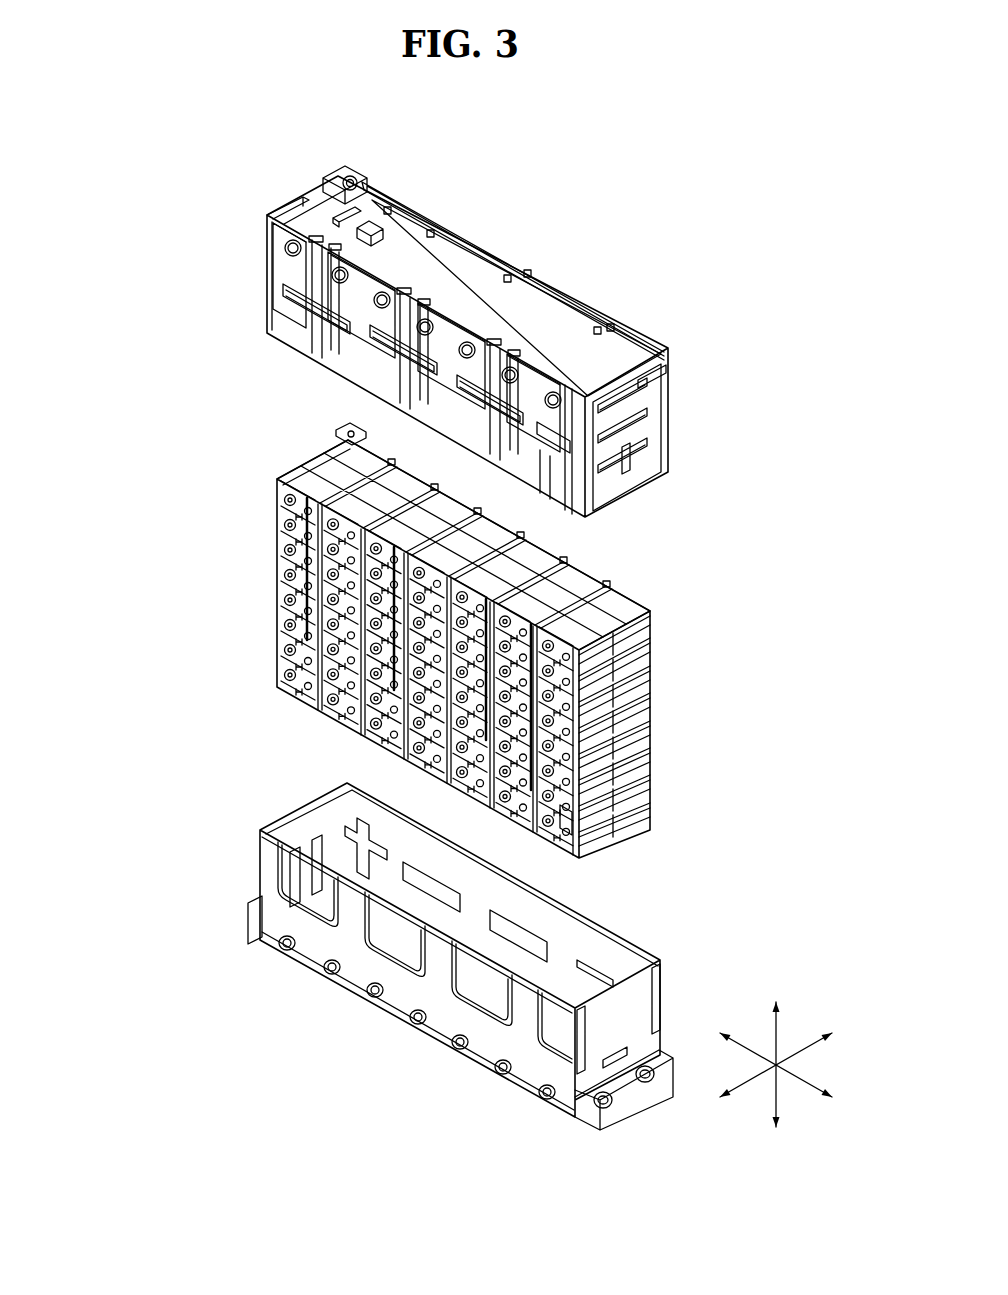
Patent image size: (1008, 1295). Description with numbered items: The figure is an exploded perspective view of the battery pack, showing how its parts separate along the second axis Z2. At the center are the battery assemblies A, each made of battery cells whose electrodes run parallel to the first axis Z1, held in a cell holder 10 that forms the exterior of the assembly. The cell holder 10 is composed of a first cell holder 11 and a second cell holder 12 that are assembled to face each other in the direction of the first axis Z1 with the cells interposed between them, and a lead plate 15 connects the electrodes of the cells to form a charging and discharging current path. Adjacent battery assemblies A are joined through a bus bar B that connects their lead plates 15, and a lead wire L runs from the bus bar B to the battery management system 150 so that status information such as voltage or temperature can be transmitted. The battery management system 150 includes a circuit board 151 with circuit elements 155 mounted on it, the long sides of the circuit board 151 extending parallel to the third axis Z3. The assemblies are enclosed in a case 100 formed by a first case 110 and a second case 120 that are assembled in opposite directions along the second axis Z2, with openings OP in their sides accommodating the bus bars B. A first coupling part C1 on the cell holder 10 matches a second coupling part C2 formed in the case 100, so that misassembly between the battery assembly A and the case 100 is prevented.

The cell holder 10 is at (632, 910).
The first cell holder 11 is at (592, 847).
The second cell holder 12 is at (633, 828).
The lead plate 15 is at (288, 517).
The case 100 is at (110, 422).
The first case 110 is at (262, 372).
The second case 120 is at (244, 831).
The battery management system 150 is at (437, 130).
The circuit board 151 is at (460, 277).
The circuit elements 155 is at (375, 222).
The battery assembly A is at (273, 689).
The bus bar B is at (314, 660).
The first coupling part C1 is at (299, 477).
The second coupling part C2 is at (417, 960).
The lead wire L is at (316, 620).
The opening OP is at (303, 902).
The first axis Z1 is at (789, 1056).
The second axis Z2 is at (777, 1052).
The third axis Z3 is at (790, 1074).